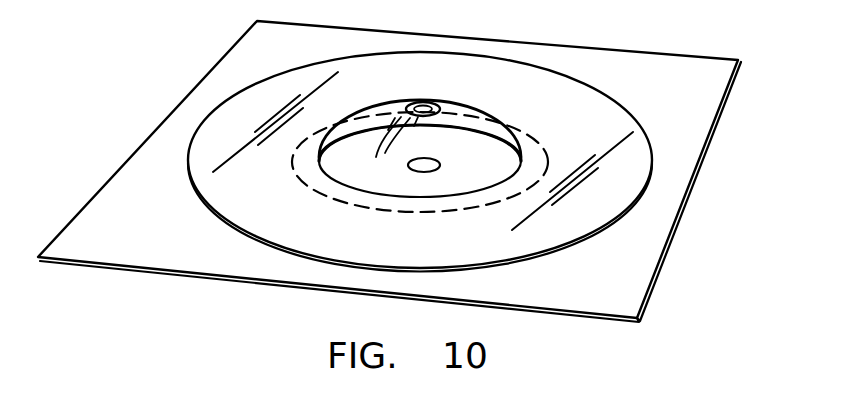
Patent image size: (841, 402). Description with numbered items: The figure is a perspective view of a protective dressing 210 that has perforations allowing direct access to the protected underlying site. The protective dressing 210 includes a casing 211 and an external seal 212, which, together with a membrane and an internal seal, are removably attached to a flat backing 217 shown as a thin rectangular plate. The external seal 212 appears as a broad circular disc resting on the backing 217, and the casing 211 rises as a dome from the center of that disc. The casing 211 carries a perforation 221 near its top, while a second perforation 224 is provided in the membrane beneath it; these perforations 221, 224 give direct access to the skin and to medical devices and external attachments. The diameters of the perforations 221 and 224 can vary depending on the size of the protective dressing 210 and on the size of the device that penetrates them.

The protective dressing 210 is at (622, 28).
The casing 211 is at (467, 108).
The external seal 212 is at (600, 128).
The backing 217 is at (690, 142).
The perforation 221 is at (405, 108).
The perforation 224 is at (408, 166).